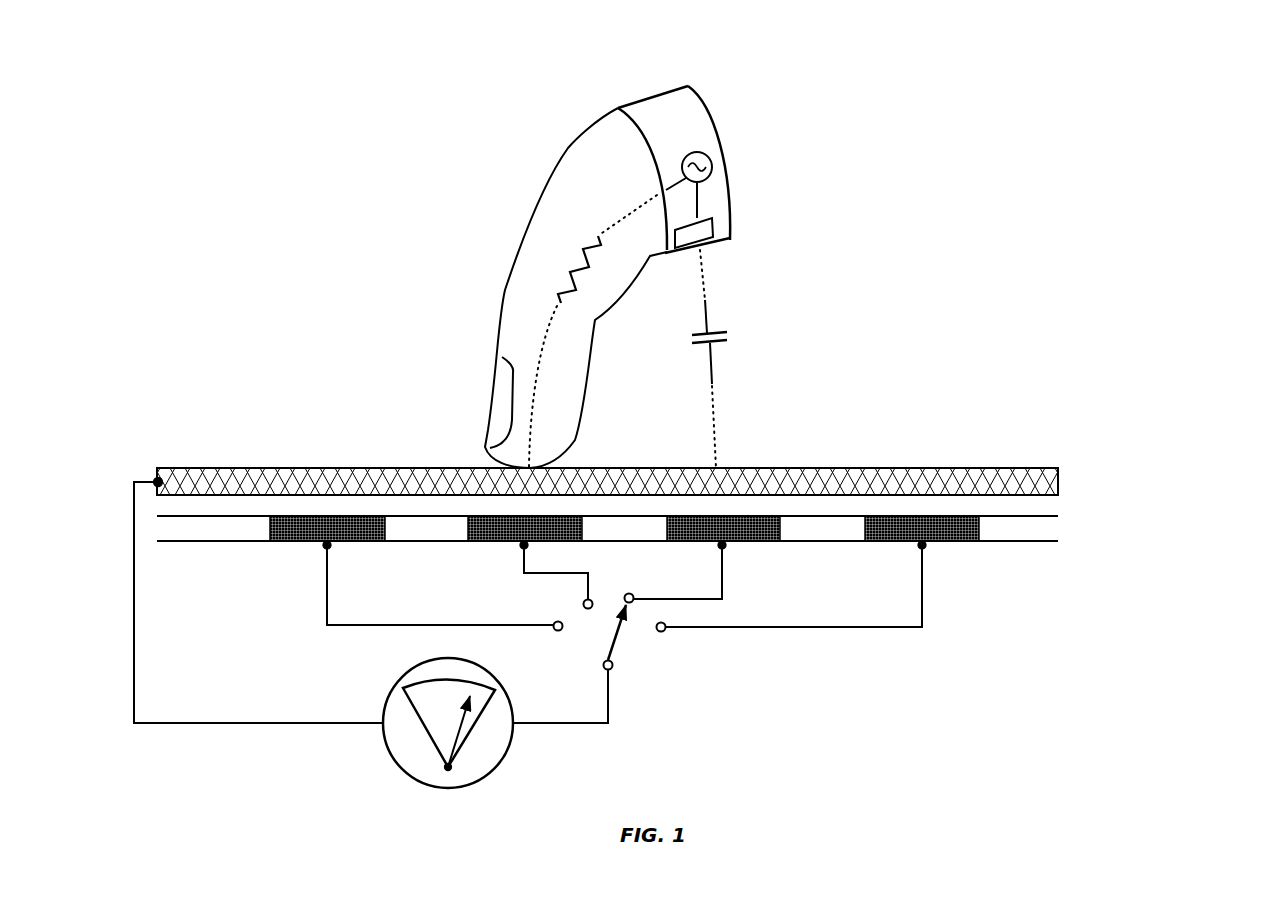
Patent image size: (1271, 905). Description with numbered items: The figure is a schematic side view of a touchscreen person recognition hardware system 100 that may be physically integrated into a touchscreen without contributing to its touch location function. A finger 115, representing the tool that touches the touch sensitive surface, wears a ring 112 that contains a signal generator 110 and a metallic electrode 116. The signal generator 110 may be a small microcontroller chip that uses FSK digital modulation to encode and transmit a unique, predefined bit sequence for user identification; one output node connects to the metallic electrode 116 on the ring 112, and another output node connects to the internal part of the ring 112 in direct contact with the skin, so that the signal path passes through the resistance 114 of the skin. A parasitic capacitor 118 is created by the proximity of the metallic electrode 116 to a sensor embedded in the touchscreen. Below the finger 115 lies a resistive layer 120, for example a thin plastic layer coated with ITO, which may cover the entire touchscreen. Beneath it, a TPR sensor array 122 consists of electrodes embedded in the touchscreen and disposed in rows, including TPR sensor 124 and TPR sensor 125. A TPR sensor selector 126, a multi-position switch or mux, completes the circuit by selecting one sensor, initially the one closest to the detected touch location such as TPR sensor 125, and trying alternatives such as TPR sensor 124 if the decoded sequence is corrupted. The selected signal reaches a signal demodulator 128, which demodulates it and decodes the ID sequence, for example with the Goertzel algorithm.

The TPR hardware system 100 is at (258, 100).
The signal generator 110 is at (697, 148).
The ring 112 is at (724, 151).
The resistance of the skin 114 is at (574, 252).
The finger 115 is at (500, 277).
The metallic electrode 116 is at (714, 236).
The parasitic capacitor 118 is at (738, 337).
The resistive layer 120 is at (390, 466).
The TPR sensor array 122 is at (700, 622).
The TPR sensor 124 is at (584, 524).
The TPR sensor 125 is at (782, 531).
The TPR sensor selector 126 is at (640, 656).
The signal demodulator 128 is at (400, 768).